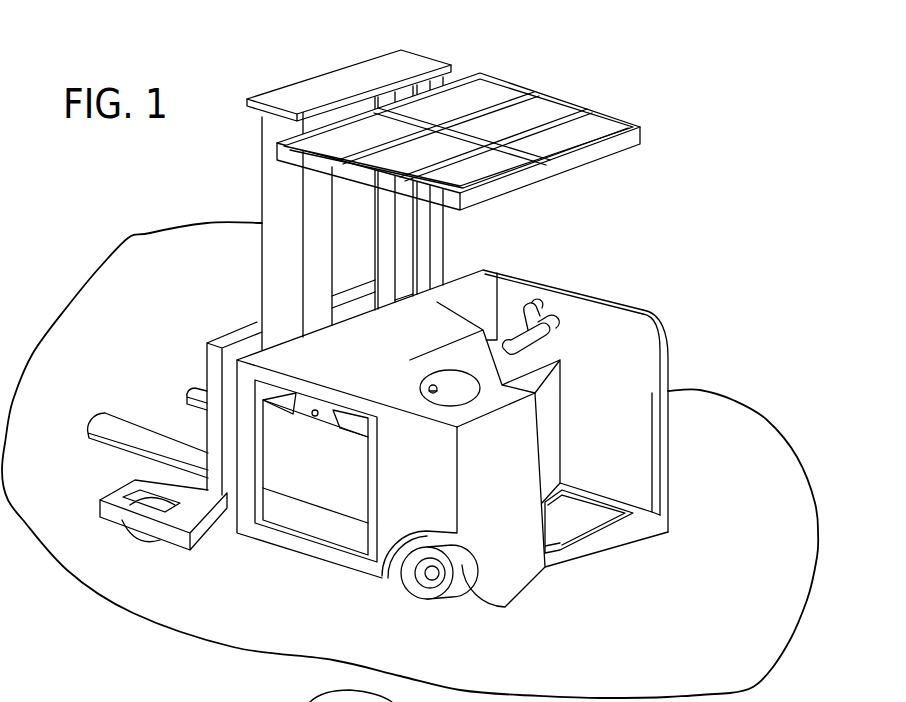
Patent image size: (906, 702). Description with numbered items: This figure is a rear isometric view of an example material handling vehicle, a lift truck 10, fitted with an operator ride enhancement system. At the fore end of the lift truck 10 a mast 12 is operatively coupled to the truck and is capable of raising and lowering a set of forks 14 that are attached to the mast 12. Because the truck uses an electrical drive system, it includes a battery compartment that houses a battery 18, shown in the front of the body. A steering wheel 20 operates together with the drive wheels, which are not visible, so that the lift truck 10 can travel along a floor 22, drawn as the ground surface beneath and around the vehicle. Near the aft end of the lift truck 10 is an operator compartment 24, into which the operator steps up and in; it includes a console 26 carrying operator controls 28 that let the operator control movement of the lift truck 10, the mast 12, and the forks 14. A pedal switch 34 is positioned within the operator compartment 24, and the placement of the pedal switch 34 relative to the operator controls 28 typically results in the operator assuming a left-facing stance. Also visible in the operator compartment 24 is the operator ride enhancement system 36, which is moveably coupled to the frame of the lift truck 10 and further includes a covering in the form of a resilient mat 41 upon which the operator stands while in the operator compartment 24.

The lift truck 10 is at (598, 78).
The mast 12 is at (427, 58).
The forks 14 is at (195, 395).
The battery 18 is at (323, 476).
The steering wheel 20 is at (405, 592).
The floor 22 is at (739, 607).
The operator compartment 24 is at (610, 425).
The console 26 is at (388, 359).
The operator controls 28 is at (560, 302).
The pedal switch 34 is at (572, 545).
The operator ride enhancement system 36 is at (570, 490).
The resilient mat 41 is at (603, 530).